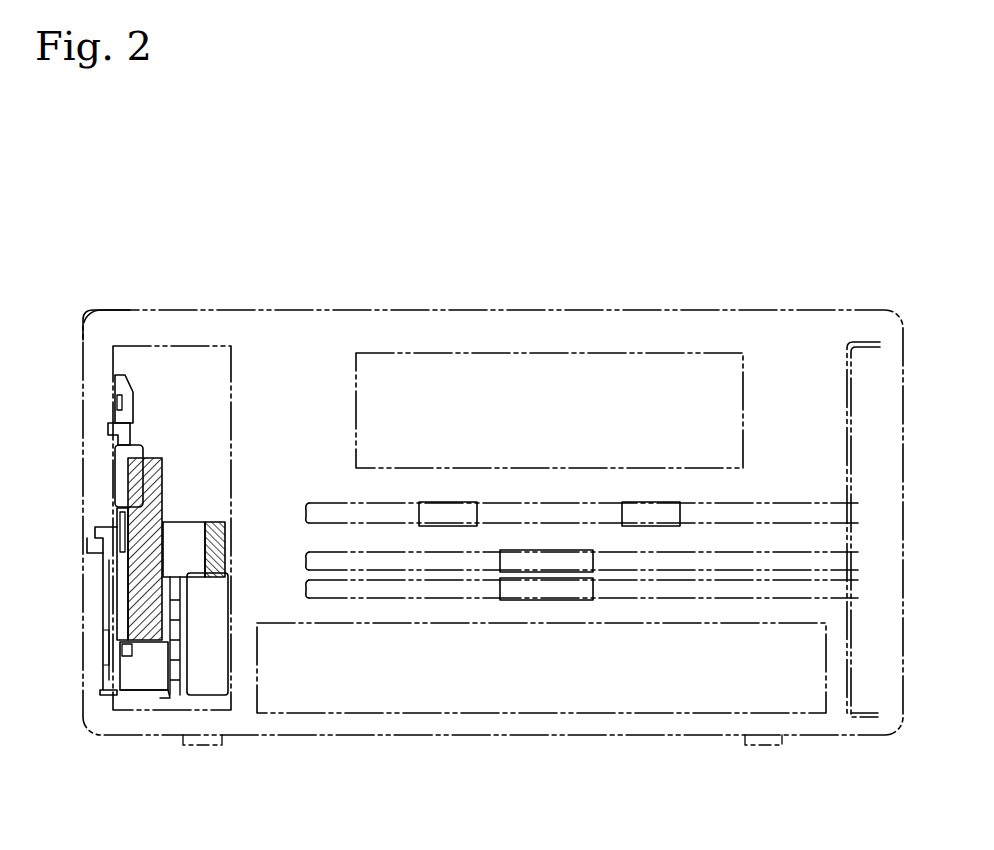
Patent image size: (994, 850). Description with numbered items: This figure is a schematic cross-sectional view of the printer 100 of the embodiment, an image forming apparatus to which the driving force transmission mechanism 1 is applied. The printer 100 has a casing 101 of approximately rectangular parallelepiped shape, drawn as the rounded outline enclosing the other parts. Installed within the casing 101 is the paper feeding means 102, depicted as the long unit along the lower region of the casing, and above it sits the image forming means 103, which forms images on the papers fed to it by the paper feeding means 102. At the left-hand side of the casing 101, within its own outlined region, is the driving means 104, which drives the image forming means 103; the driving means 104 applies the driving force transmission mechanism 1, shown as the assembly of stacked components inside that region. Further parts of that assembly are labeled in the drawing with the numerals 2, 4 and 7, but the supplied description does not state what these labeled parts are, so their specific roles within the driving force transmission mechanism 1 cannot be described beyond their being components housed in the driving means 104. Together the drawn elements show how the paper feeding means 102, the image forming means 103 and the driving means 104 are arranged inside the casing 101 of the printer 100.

The printer 100 is at (104, 300).
The casing 101 is at (608, 310).
The paper feeding means 102 is at (472, 700).
The image forming means 103 is at (469, 352).
The driving means 104 is at (197, 345).
The driving force transmission mechanism 1 is at (128, 482).
The holder 2 is at (110, 593).
The motor 4 is at (188, 528).
The frame 7 is at (215, 605).